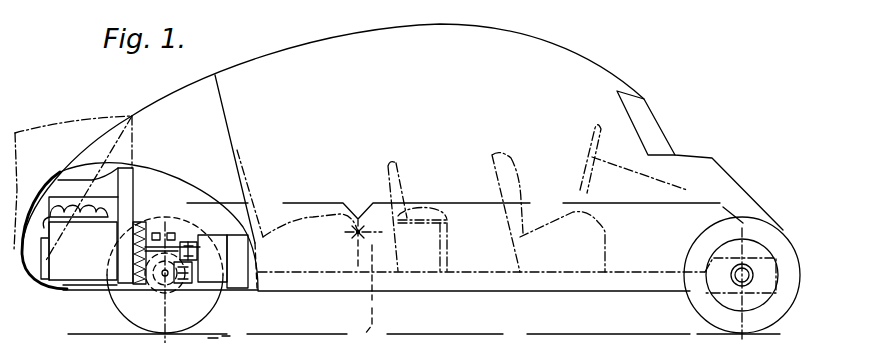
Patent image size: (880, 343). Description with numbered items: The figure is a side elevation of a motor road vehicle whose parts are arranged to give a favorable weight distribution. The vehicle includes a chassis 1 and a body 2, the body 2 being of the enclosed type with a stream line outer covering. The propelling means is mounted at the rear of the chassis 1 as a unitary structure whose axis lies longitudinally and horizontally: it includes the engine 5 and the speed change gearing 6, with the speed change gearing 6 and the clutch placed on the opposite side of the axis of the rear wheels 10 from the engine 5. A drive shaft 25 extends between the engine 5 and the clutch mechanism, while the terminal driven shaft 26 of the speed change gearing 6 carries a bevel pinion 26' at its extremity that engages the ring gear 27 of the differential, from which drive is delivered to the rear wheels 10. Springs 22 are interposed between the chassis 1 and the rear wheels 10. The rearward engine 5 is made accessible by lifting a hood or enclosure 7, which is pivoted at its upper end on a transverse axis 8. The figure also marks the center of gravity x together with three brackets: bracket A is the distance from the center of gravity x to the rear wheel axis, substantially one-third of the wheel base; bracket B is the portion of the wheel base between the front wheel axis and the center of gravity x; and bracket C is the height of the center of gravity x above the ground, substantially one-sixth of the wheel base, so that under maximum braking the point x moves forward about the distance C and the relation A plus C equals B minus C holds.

The chassis 1 is at (438, 298).
The body 2 is at (606, 74).
The engine 5 is at (80, 242).
The speed change gearing 6 is at (212, 258).
The hood or enclosure 7 is at (46, 132).
The transverse axis 8 is at (131, 116).
The rear wheels 10 is at (121, 297).
The springs 22 is at (170, 232).
The drive shaft 25 is at (186, 246).
The terminal driven shaft 26 is at (210, 291).
The bevel pinion 26' is at (178, 290).
The ring gear 27 is at (160, 286).
The bracket A is at (283, 203).
The bracket B is at (563, 203).
The bracket C is at (374, 302).
The center of gravity x is at (363, 241).